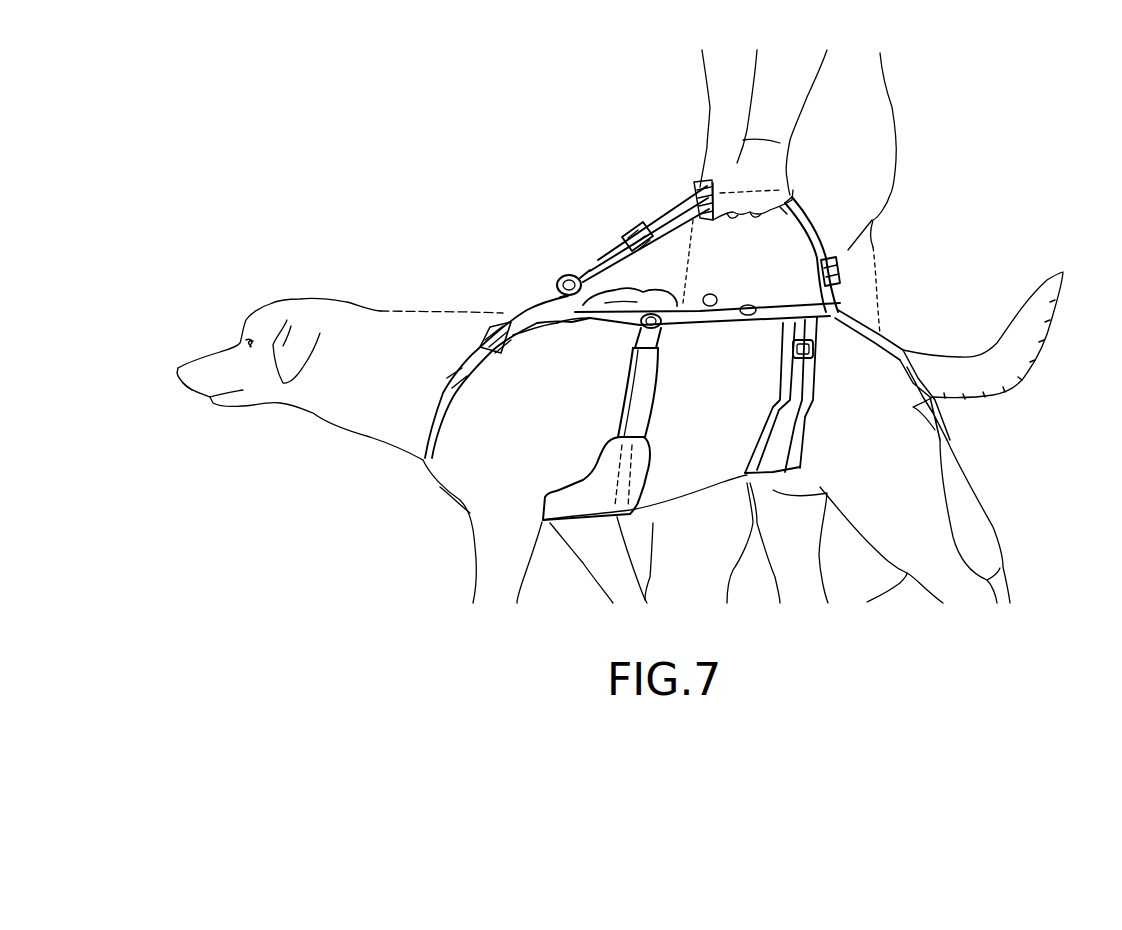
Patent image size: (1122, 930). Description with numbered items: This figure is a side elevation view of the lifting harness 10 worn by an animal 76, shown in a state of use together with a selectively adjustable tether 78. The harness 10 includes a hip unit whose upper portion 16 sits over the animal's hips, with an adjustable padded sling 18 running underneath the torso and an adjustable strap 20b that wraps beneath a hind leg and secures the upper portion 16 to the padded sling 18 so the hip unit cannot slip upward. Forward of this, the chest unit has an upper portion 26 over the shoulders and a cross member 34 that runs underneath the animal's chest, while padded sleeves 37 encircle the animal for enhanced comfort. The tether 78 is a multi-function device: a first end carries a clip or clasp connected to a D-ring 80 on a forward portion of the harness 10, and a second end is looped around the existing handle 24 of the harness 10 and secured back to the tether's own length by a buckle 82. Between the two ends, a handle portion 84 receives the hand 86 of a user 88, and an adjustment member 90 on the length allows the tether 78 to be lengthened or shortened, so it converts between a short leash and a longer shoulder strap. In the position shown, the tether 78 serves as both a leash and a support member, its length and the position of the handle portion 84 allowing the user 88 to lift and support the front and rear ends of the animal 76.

The lifting harness 10 is at (517, 300).
The upper portion of the hip unit 16 is at (823, 337).
The padded sling 18 is at (802, 437).
The adjustable strap 20b is at (900, 357).
The handle 24 is at (840, 305).
The upper portion of the chest unit 26 is at (540, 322).
The cross member 34 is at (648, 478).
The padded sleeve 37 is at (643, 394).
The animal 76 is at (453, 477).
The tether 78 is at (655, 232).
The D-ring 80 is at (553, 300).
The buckle 82 is at (837, 278).
The handle portion 84 is at (790, 205).
The hand 86 is at (737, 173).
The user 88 is at (720, 68).
The adjustment member 90 is at (627, 243).